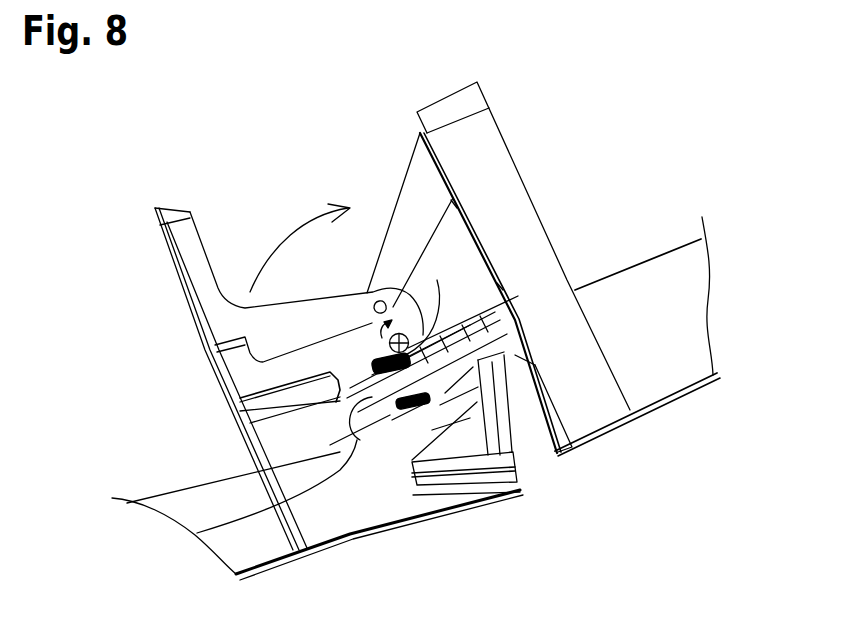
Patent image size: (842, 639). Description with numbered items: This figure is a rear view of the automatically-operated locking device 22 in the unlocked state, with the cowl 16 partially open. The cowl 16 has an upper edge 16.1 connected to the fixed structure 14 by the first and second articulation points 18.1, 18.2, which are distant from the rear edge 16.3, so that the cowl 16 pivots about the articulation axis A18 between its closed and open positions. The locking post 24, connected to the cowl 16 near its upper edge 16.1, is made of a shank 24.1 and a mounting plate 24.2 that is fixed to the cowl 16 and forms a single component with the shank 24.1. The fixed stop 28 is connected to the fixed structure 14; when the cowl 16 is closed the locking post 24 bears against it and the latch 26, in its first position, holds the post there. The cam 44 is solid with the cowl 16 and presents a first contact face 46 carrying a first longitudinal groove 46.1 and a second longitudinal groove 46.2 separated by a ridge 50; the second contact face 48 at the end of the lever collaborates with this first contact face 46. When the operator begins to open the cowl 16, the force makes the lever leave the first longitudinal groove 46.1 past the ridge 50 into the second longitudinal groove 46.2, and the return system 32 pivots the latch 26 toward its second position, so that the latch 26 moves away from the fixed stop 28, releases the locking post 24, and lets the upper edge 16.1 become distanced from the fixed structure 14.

The fixed structure 14 is at (564, 286).
The fixed stop 28 is at (507, 341).
The first articulation point 18.1 is at (370, 292).
The second articulation point 18.2 is at (437, 280).
The articulation axis A18 is at (405, 335).
The return system 32 is at (356, 351).
The ridge 50 is at (253, 300).
The cam 44 is at (268, 437).
The first contact face 46 is at (390, 432).
The first longitudinal groove 46.1 is at (240, 407).
The second longitudinal groove 46.2 is at (197, 533).
The second contact face 48 is at (364, 418).
The cowl 16 is at (263, 545).
The upper edge 16.1 is at (515, 470).
The rear edge 16.3 is at (490, 500).
The locking post 24 is at (510, 412).
The shank 24.1 is at (507, 433).
The mounting plate 24.2 is at (450, 470).
The latch 26 is at (452, 420).
The automatically-operated locking device 22 is at (440, 397).